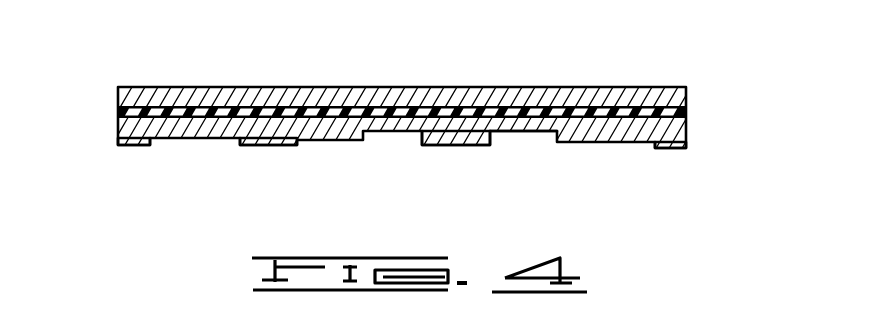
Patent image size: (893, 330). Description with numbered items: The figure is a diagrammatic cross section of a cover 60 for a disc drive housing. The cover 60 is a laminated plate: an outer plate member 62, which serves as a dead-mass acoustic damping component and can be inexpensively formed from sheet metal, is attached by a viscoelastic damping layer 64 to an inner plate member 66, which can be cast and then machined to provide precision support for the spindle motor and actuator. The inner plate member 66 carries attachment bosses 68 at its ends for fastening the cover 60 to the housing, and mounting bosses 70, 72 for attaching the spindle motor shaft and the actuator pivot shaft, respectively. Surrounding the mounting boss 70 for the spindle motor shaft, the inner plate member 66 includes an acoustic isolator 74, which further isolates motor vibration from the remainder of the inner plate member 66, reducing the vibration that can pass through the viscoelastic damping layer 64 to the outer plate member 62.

The cover 60 is at (368, 82).
The outer plate member 62 is at (505, 87).
The viscoelastic damping layer 64 is at (686, 121).
The inner plate member 66 is at (173, 142).
The attachment bosses 68 is at (132, 147).
The mounting boss 70 is at (440, 147).
The mounting boss 72 is at (280, 145).
The acoustic isolator 74 is at (524, 141).